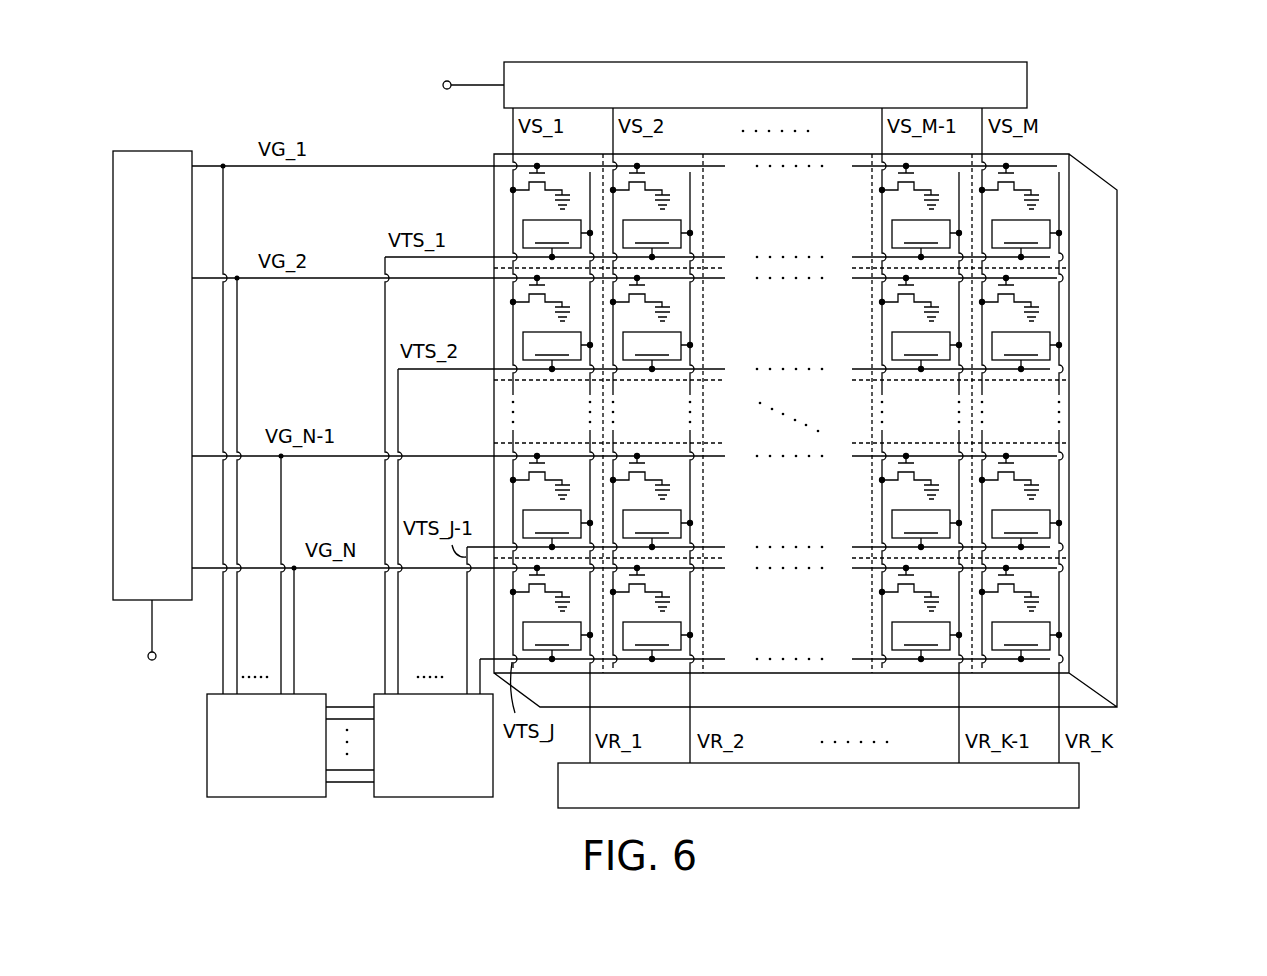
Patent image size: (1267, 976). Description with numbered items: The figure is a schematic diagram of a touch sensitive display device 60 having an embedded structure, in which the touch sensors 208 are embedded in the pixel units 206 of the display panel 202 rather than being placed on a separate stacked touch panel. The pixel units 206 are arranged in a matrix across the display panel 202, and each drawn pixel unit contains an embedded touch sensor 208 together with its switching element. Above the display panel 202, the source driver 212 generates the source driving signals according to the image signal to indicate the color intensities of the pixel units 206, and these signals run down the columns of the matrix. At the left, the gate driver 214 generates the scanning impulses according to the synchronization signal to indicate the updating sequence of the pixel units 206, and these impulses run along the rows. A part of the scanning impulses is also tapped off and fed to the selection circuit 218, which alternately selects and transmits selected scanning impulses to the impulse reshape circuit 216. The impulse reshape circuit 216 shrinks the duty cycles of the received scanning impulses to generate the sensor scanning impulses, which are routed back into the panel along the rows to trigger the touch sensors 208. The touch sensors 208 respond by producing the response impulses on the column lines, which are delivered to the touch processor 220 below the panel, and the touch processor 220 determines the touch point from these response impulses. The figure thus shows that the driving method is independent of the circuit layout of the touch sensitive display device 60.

The touch sensitive display device 60 is at (1162, 97).
The display panel 202 is at (1117, 241).
The pixel units 206 is at (1062, 157).
The touch sensors 208 is at (786, 413).
The source driver 212 is at (966, 62).
The gate driver 214 is at (159, 151).
The impulse reshape circuit 216 is at (410, 797).
The selection circuit 218 is at (245, 797).
The touch processor 220 is at (1079, 785).